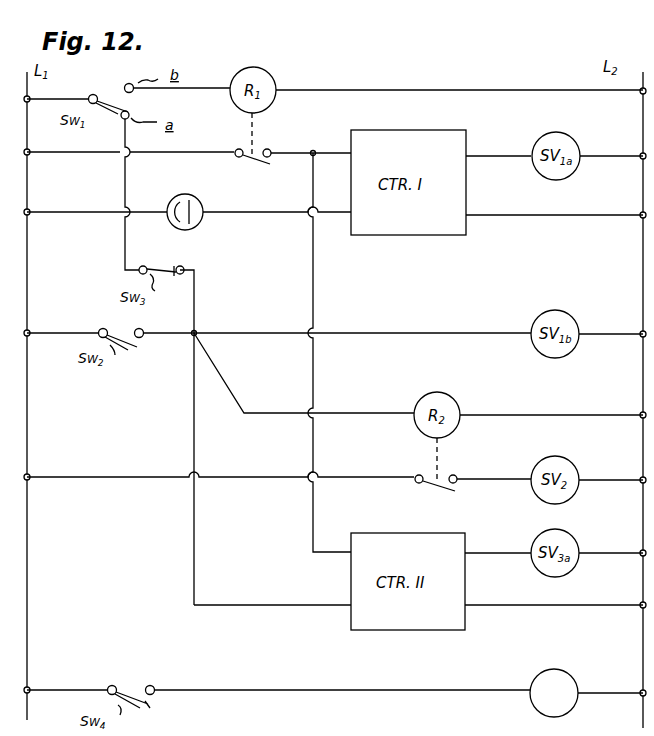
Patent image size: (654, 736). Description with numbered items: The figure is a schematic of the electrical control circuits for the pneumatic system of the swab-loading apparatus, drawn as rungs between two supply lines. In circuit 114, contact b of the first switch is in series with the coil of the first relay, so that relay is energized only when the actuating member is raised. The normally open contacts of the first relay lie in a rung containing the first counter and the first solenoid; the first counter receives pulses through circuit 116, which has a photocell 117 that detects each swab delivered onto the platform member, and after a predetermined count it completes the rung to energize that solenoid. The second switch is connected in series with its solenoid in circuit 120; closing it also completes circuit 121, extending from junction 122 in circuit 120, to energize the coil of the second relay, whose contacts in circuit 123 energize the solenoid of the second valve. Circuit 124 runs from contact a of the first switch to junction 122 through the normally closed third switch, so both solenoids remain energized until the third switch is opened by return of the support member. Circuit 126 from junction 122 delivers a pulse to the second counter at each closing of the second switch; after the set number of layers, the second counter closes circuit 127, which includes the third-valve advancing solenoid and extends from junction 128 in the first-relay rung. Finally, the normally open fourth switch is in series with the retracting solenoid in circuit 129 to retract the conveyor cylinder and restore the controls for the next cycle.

The circuit 114 is at (397, 90).
The circuit 116 is at (295, 209).
The photocell 117 is at (200, 194).
The circuit 120 is at (278, 332).
The circuit 121 is at (253, 412).
The junction 122 is at (197, 331).
The circuit 123 is at (223, 476).
The circuit 124 is at (123, 251).
The circuit 126 is at (277, 602).
The circuit 127 is at (316, 508).
The junction 128 is at (316, 146).
The circuit 129 is at (343, 689).